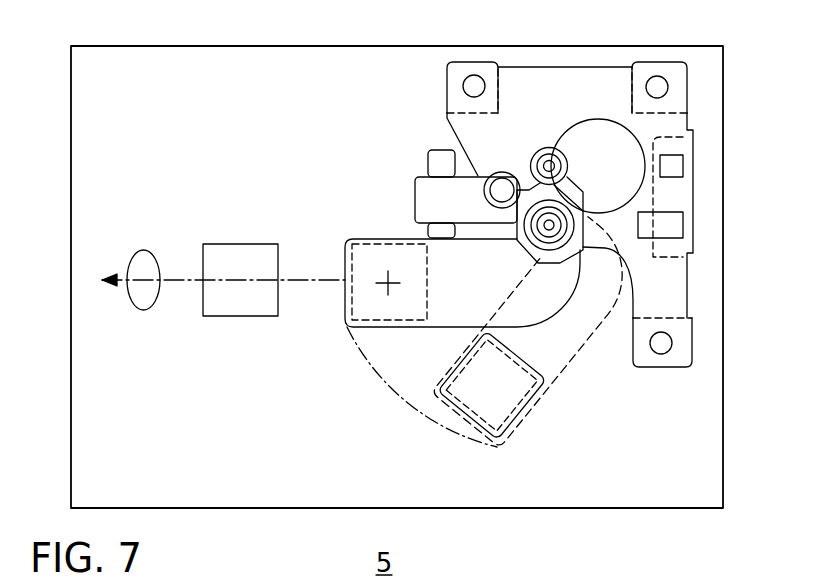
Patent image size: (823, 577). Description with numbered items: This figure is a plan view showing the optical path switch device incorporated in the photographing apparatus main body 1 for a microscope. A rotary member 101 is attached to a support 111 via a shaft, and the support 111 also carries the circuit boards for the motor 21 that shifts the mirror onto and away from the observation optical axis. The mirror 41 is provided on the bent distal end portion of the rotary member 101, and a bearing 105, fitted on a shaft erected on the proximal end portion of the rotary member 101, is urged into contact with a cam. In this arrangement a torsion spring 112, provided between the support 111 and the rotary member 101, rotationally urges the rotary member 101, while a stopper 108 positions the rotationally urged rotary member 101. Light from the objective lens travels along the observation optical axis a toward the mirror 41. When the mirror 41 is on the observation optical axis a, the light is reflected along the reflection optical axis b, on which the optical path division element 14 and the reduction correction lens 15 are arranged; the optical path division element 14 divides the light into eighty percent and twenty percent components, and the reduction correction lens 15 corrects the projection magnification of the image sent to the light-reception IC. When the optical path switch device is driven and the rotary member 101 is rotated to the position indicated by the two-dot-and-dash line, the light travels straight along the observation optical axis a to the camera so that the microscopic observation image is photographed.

The photographing apparatus main body 1 is at (725, 116).
The support 111 is at (611, 73).
The motor 21 is at (595, 122).
The stopper 108 is at (443, 154).
The bearing 105 is at (537, 152).
The torsion spring 112 is at (585, 247).
The rotary member 101 is at (558, 293).
The mirror 41 is at (370, 243).
The observation optical axis a is at (392, 289).
The reflection optical axis b is at (308, 278).
The reduction correction lens 15 is at (146, 251).
The optical path division element 14 is at (244, 255).